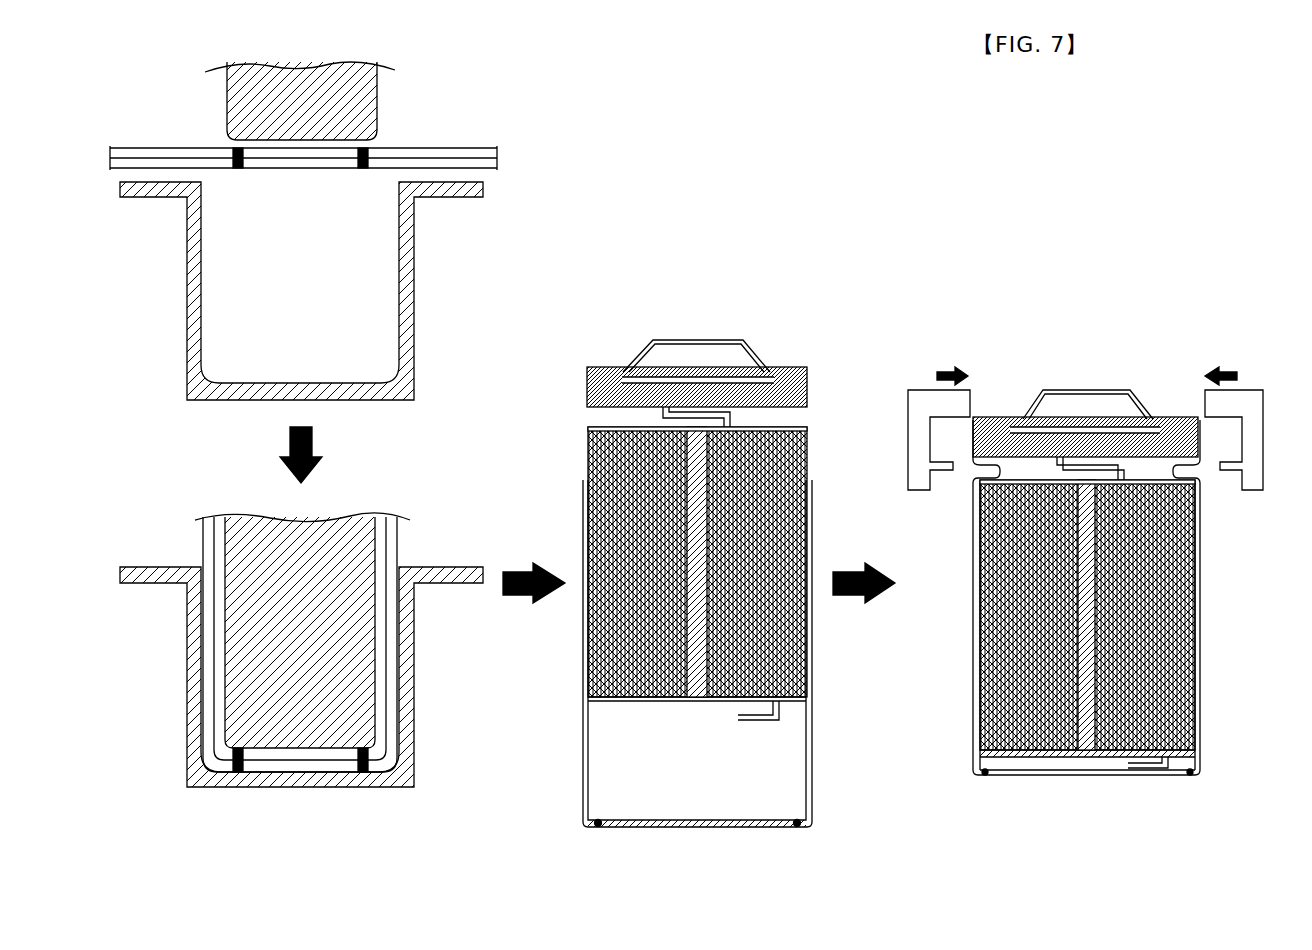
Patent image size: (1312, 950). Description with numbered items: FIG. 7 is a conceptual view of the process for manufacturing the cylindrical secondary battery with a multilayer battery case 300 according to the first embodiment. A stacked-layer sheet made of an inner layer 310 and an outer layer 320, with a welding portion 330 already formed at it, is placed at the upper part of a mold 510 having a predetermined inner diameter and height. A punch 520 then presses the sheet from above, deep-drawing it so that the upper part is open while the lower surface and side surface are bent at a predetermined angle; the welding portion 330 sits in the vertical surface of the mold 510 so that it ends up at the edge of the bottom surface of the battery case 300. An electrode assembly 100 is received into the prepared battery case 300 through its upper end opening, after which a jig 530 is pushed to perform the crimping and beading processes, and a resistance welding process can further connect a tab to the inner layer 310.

The electrode assembly 100 is at (588, 443).
The battery case 300 is at (587, 388).
The inner layer 310 is at (432, 150).
The outer layer 320 is at (488, 158).
The welding portion 330 is at (240, 168).
The mold 510 is at (415, 296).
The punch 520 is at (235, 105).
The jig 530 is at (918, 390).